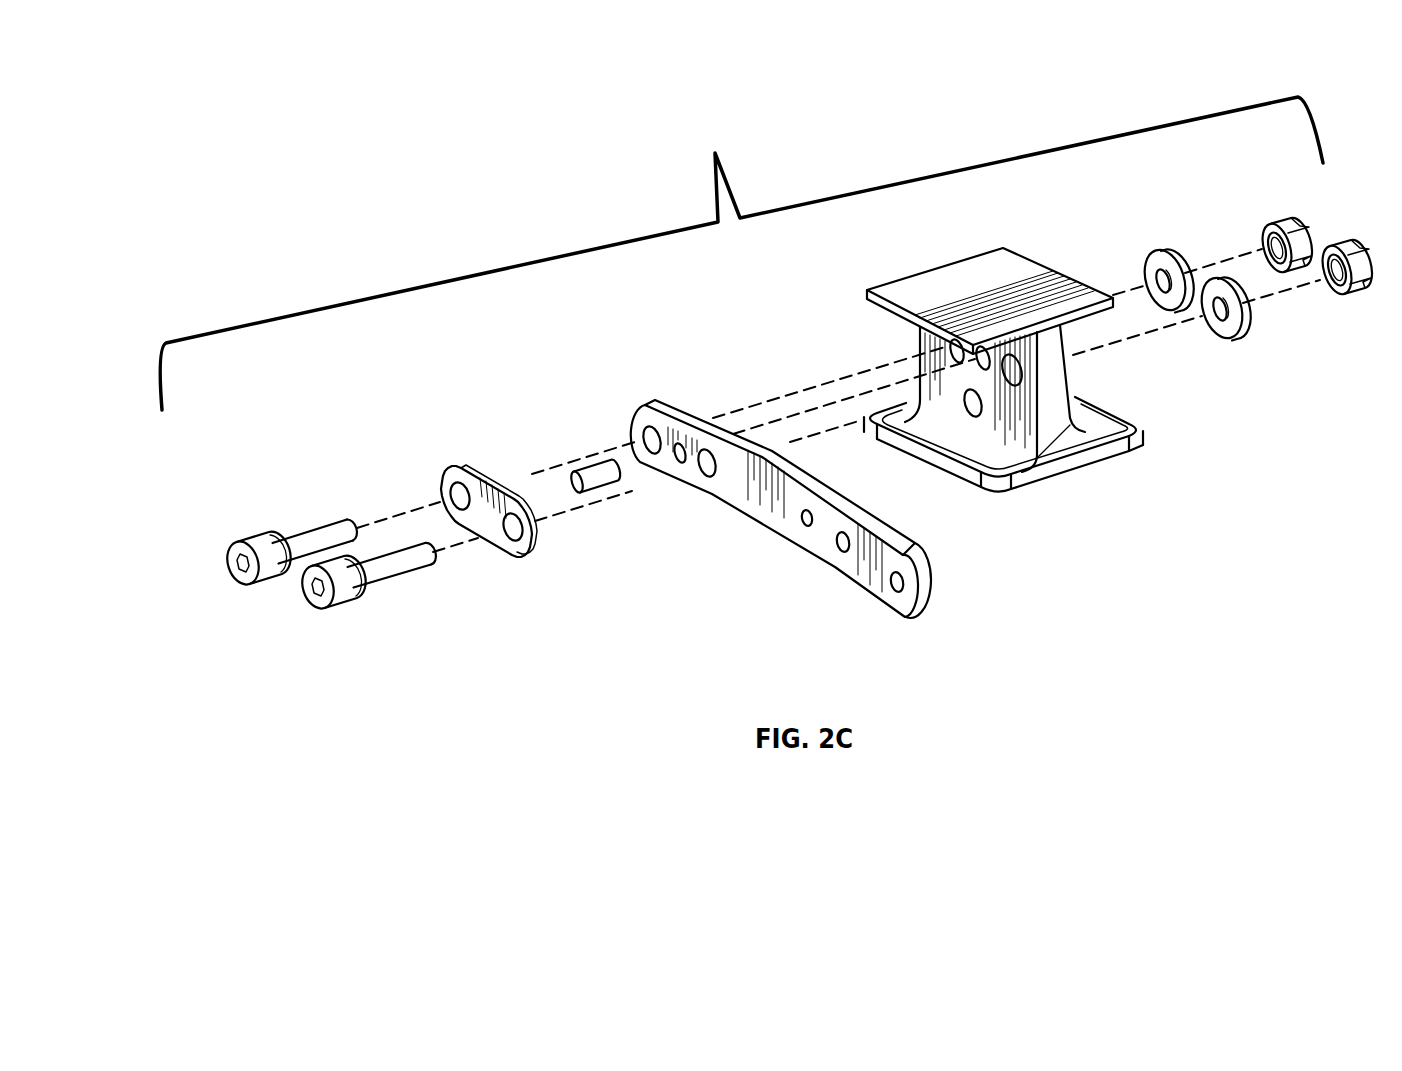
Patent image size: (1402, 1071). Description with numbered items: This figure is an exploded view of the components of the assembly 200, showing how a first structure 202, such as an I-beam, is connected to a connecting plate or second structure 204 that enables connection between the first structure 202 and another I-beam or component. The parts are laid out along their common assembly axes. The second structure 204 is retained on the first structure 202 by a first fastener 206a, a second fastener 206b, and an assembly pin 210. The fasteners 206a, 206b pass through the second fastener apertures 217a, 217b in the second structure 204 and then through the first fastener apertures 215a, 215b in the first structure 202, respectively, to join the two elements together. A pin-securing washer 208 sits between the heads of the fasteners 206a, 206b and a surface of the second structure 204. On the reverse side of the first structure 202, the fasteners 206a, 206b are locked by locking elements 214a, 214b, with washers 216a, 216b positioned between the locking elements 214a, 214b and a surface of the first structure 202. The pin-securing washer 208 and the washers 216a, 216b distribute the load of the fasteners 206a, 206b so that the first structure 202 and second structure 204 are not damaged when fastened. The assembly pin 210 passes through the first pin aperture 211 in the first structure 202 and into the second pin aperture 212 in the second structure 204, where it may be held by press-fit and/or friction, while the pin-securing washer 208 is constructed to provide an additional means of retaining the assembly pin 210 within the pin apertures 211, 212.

The assembly 200 is at (741, 253).
The first structure 202 is at (1078, 470).
The second structure 204 is at (928, 589).
The first fastener 206a is at (247, 540).
The second fastener 206b is at (337, 608).
The pin-securing washer 208 is at (453, 472).
The assembly pin 210 is at (603, 497).
The first pin aperture 211 is at (984, 349).
The second pin aperture 212 is at (682, 447).
The locking element 214a is at (1288, 225).
The locking element 214b is at (1345, 292).
The first fastener aperture 215a is at (918, 330).
The first fastener aperture 215b is at (1040, 372).
The washer 216a is at (1153, 262).
The washer 216b is at (1222, 330).
The second fastener aperture 217a is at (648, 432).
The second fastener aperture 217b is at (707, 478).